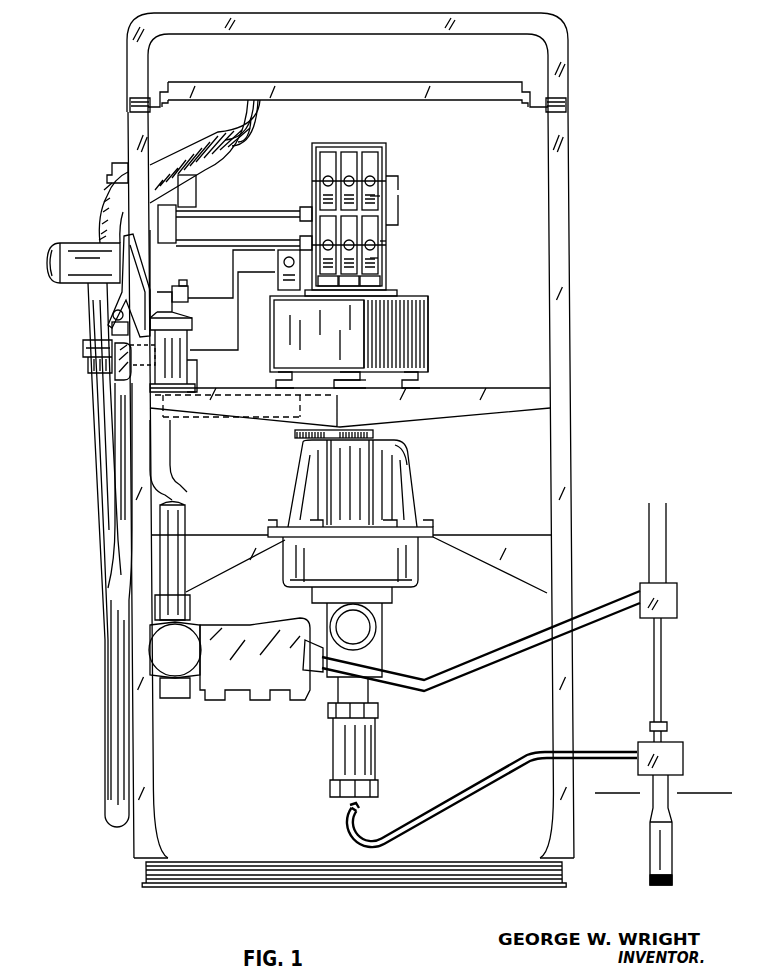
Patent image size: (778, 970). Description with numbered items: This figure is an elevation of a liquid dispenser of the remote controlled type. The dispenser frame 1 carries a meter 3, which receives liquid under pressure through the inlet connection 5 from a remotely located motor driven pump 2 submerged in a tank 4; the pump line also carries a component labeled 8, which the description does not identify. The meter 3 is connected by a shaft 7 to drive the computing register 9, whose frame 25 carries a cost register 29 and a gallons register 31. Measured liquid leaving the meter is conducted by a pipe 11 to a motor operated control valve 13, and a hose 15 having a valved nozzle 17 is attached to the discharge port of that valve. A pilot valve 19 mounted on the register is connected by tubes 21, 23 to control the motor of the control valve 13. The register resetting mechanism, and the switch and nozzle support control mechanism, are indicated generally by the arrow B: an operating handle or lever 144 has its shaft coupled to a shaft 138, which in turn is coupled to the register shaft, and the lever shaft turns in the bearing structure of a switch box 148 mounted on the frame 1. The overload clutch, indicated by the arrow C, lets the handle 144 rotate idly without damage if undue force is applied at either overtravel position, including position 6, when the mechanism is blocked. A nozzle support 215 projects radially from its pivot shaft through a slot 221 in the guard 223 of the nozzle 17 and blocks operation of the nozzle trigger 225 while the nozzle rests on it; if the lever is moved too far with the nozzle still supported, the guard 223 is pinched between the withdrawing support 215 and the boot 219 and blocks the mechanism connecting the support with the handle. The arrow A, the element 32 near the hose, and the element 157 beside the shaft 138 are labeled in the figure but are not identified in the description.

The dispenser frame 1 is at (566, 223).
The motor driven pump 2 is at (672, 845).
The meter 3 is at (408, 472).
The tank 4 is at (722, 794).
The inlet connection 5 is at (383, 747).
The tubing 6 is at (665, 550).
The shaft 7 is at (356, 385).
The connector box 8 is at (679, 595).
The computing register 9 is at (386, 241).
The pipe 11 is at (228, 425).
The motor operated control valve 13 is at (194, 364).
The hose 15 is at (104, 735).
The valved nozzle 17 is at (75, 282).
The pilot valve 19 is at (286, 298).
The tube 21 is at (237, 323).
The tube 23 is at (236, 300).
The register frame 25 is at (388, 160).
The cost register 29 is at (380, 196).
The gallons register 31 is at (378, 258).
The hose hanger 32 is at (112, 382).
The shaft 138 is at (226, 240).
The operating handle or lever 144 is at (116, 160).
The switch box 148 is at (196, 186).
The operating rod 157 is at (224, 212).
The nozzle support 215 is at (112, 327).
The boot 219 is at (233, 130).
The slot 221 is at (140, 353).
The guard 223 is at (86, 342).
The nozzle trigger 225 is at (156, 270).
The register section A is at (399, 184).
The register resetting mechanism B is at (184, 208).
The overload clutch C is at (401, 226).